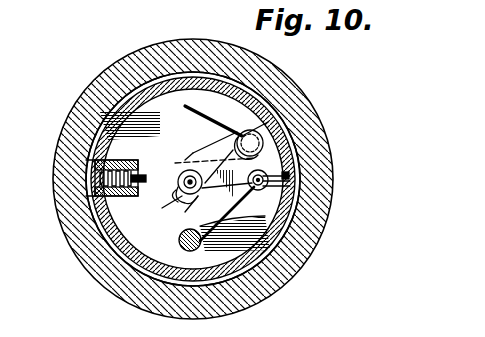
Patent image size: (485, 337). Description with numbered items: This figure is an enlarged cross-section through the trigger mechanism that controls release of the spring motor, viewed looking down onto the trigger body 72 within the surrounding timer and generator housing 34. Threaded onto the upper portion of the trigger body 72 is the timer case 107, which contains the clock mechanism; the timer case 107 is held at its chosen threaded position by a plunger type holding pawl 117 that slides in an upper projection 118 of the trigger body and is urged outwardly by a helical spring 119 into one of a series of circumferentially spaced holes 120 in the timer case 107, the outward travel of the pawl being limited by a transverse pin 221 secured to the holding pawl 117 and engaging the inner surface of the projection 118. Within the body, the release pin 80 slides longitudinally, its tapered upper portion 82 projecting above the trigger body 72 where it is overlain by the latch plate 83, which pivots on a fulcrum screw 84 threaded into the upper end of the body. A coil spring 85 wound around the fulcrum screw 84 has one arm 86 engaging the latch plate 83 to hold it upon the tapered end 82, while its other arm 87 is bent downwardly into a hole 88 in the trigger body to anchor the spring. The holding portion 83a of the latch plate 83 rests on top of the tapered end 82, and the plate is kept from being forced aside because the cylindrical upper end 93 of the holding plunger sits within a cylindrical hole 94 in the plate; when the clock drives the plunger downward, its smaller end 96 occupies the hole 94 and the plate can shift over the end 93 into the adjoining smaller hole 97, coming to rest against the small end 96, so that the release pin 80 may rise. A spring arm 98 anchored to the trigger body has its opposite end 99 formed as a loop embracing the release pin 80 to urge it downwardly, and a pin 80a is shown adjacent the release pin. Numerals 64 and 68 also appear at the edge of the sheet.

The timer and generator housing 34 is at (82, 265).
The timer case 107 is at (108, 283).
The trigger body 72 is at (128, 297).
The part 64 is at (95, 6).
The part 68 is at (142, 6).
The coil spring 85 is at (296, 96).
The spring arm 86 is at (222, 122).
The spring arm 87 is at (190, 126).
The hole 88 is at (190, 108).
The fulcrum screw 84 is at (298, 137).
The release pin 80 is at (318, 153).
The pin 80a is at (318, 174).
The tapered upper portion 82 is at (318, 190).
The looped end 99 is at (322, 213).
The spring arm 98 is at (304, 236).
The cylindrical upper end 93 is at (185, 168).
The cylindrical hole 94 is at (176, 190).
The smaller end 96 is at (166, 204).
The smaller hole 97 is at (186, 206).
The latch plate 83 is at (180, 237).
The holding portion 83a is at (262, 222).
The transverse pin 221 is at (141, 172).
The helical spring 119 is at (90, 160).
The holding pawl 117 is at (93, 178).
The holes 120 is at (98, 181).
The upper projection 118 is at (90, 196).